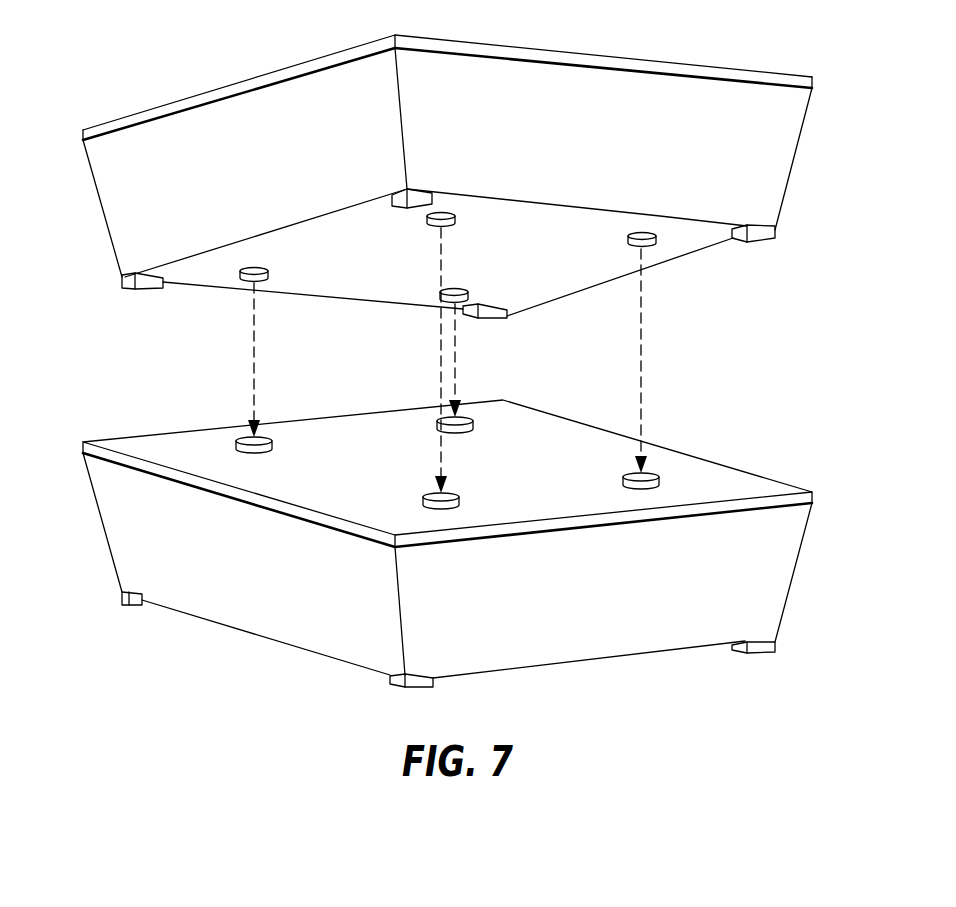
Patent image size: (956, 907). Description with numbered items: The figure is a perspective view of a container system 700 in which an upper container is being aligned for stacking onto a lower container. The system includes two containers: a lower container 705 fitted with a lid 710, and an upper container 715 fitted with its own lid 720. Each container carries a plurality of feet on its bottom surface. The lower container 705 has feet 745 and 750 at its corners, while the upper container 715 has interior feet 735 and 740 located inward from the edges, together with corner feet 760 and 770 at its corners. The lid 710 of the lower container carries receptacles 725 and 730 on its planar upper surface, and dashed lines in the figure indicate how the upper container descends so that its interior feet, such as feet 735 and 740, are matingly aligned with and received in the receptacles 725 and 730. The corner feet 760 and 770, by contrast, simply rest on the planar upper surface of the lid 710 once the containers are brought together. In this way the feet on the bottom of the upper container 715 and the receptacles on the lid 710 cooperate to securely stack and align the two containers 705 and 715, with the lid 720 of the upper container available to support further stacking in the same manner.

The container system 700 is at (123, 70).
The container 705 is at (104, 532).
The lid 710 is at (158, 436).
The container 715 is at (108, 228).
The lid 720 is at (308, 61).
The receptacle 725 is at (631, 476).
The receptacle 730 is at (455, 496).
The interior foot 735 is at (650, 247).
The interior foot 740 is at (447, 227).
The foot 745 is at (760, 655).
The foot 750 is at (145, 604).
The corner foot 760 is at (770, 242).
The corner foot 770 is at (140, 286).